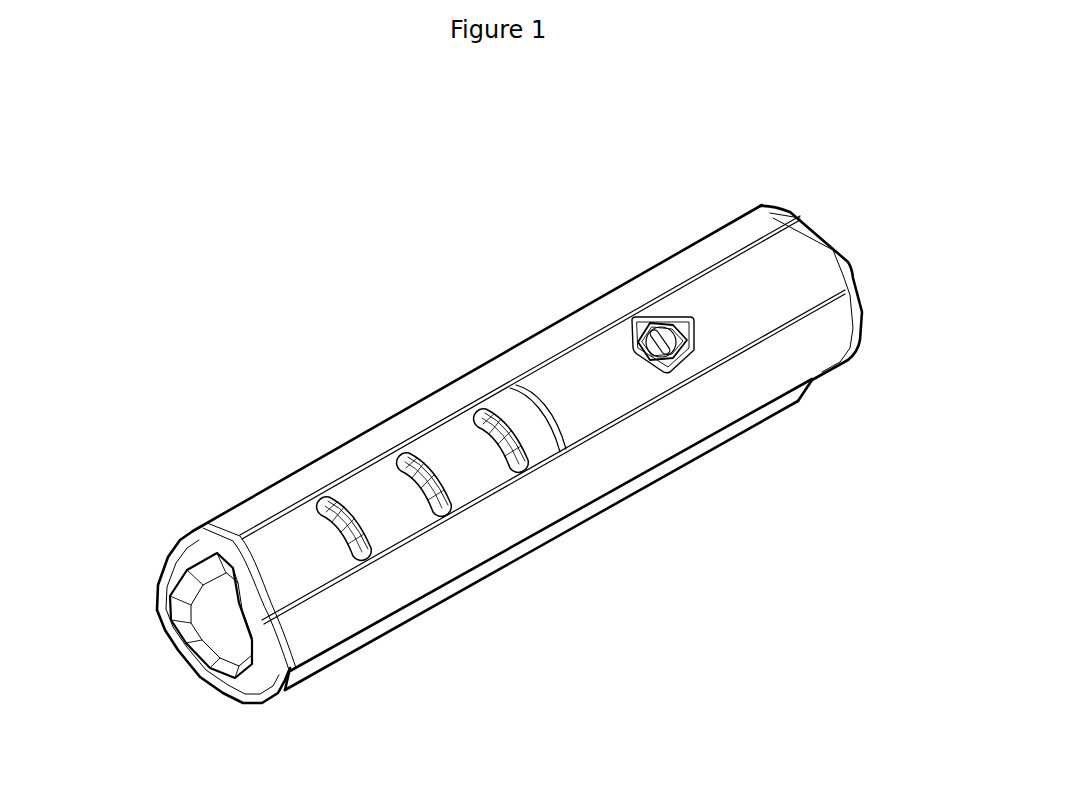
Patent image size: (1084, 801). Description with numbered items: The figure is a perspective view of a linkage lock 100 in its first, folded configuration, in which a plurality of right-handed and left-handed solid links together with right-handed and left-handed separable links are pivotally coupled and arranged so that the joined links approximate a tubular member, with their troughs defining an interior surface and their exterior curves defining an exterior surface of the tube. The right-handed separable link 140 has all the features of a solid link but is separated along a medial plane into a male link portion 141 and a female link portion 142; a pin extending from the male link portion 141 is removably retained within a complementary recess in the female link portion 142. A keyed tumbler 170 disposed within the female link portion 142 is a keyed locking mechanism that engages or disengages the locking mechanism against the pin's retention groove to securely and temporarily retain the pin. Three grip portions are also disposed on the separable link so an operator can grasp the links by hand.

The linkage lock 100 is at (477, 317).
The right-handed separable link 140 is at (180, 662).
The male link portion 141 is at (450, 442).
The female link portion 142 is at (765, 258).
The keyed tumbler 170 is at (662, 325).